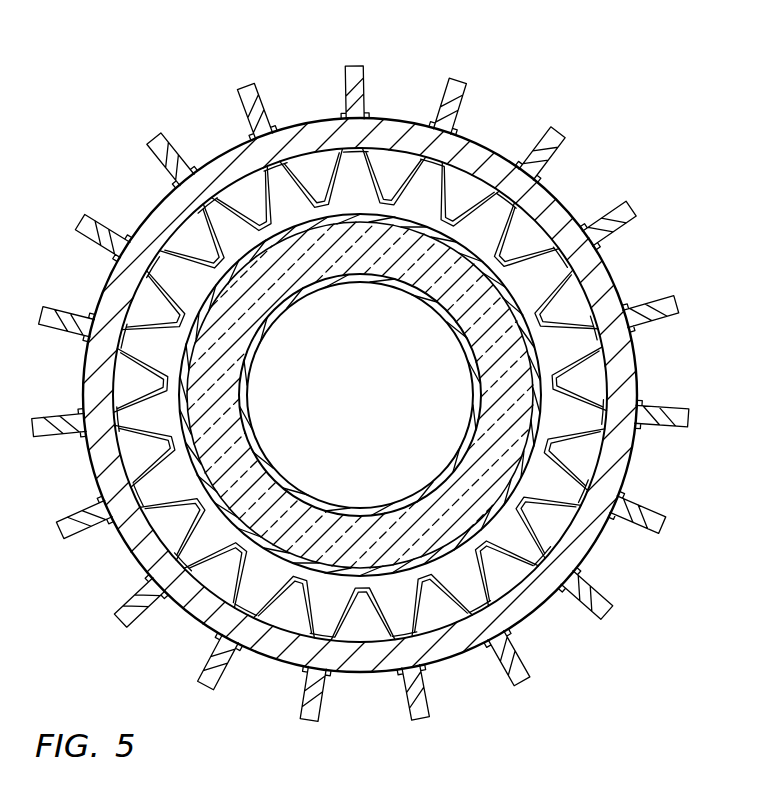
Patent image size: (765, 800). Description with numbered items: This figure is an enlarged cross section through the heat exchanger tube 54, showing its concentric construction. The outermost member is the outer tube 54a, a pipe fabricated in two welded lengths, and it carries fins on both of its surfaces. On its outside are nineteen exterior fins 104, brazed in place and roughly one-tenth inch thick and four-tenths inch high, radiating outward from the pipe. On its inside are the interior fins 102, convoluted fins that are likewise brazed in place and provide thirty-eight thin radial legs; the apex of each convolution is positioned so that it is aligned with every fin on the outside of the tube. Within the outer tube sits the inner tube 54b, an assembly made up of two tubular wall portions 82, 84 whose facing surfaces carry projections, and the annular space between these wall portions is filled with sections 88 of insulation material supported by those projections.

The heat exchanger tube 54 is at (306, 88).
The outer tube 54a is at (556, 215).
The inner tube 54b is at (453, 290).
The tubular wall portion 82 is at (432, 484).
The tubular wall portion 84 is at (233, 491).
The sections of insulation material 88 is at (230, 406).
The interior fins 102 is at (573, 423).
The exterior fins 104 is at (662, 312).